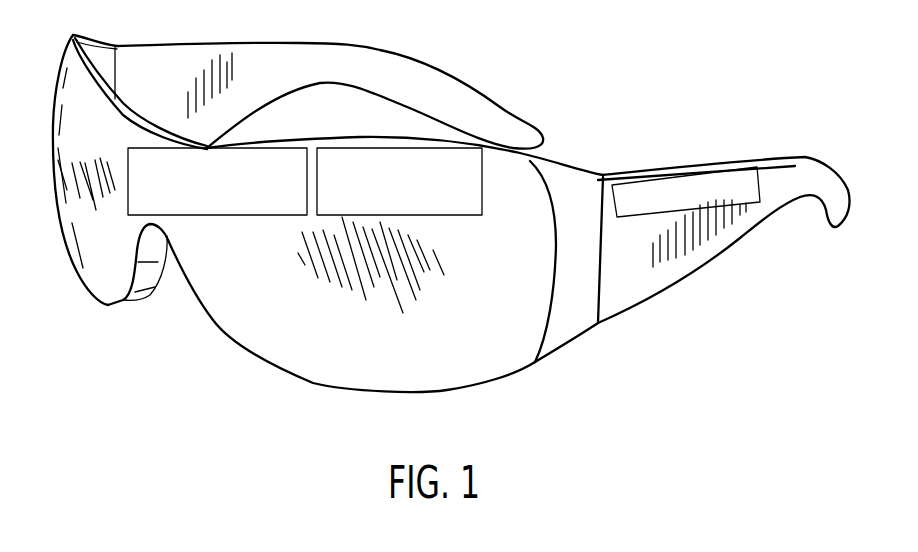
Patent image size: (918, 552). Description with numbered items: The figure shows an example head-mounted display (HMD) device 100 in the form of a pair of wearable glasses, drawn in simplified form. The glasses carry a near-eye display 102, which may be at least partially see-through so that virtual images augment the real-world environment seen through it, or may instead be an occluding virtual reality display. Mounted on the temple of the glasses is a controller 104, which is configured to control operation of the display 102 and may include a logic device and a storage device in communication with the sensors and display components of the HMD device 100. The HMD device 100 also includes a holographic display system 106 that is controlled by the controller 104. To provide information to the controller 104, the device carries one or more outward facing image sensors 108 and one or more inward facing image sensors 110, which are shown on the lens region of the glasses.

The head-mounted display device 100 is at (485, 33).
The near-eye display 102 is at (252, 330).
The controller 104 is at (730, 170).
The holographic display system 106 is at (140, 277).
The outward facing image sensor 108 is at (273, 148).
The inward facing image sensor 110 is at (363, 148).